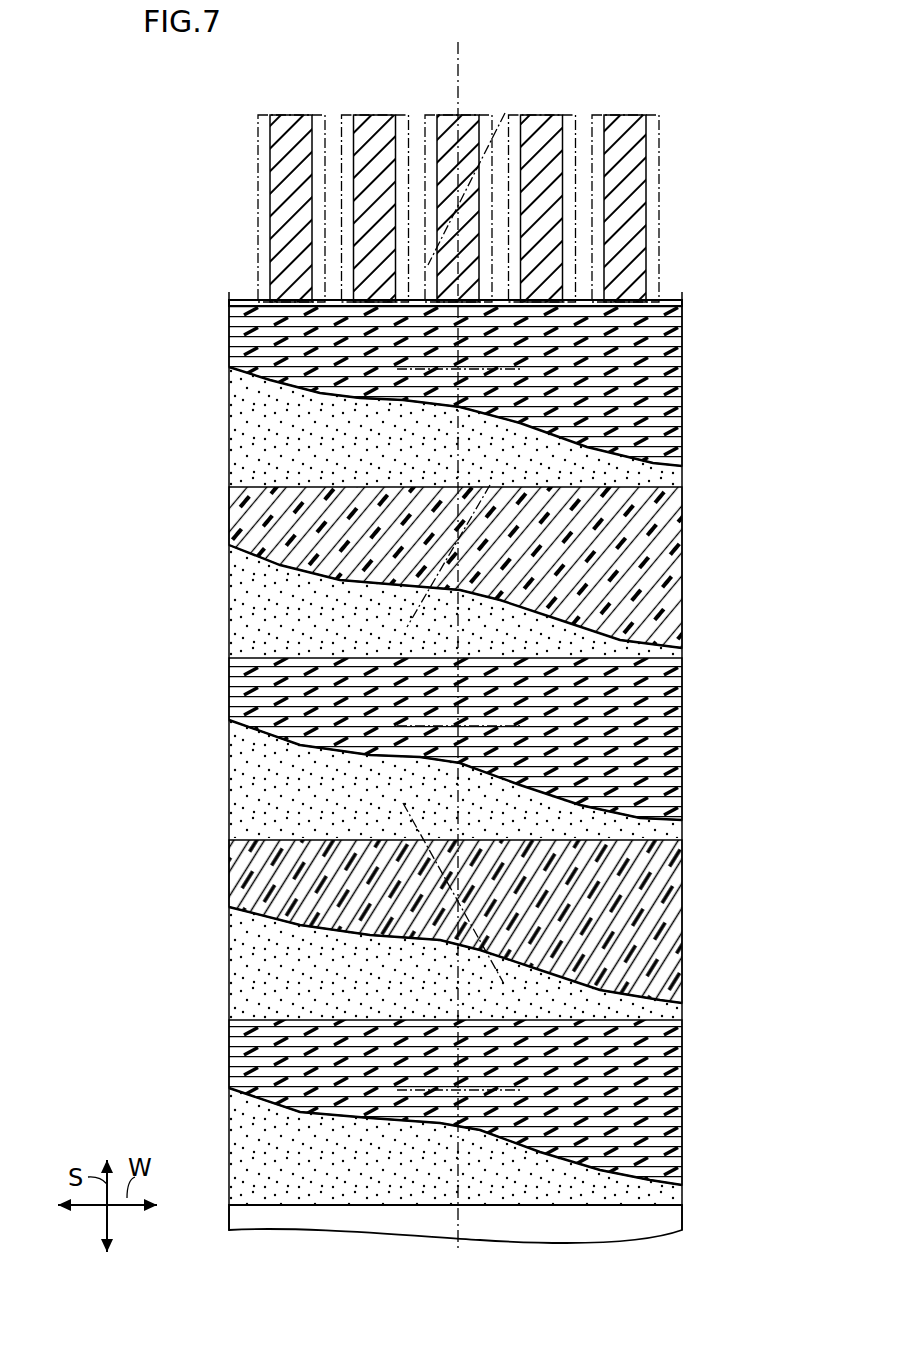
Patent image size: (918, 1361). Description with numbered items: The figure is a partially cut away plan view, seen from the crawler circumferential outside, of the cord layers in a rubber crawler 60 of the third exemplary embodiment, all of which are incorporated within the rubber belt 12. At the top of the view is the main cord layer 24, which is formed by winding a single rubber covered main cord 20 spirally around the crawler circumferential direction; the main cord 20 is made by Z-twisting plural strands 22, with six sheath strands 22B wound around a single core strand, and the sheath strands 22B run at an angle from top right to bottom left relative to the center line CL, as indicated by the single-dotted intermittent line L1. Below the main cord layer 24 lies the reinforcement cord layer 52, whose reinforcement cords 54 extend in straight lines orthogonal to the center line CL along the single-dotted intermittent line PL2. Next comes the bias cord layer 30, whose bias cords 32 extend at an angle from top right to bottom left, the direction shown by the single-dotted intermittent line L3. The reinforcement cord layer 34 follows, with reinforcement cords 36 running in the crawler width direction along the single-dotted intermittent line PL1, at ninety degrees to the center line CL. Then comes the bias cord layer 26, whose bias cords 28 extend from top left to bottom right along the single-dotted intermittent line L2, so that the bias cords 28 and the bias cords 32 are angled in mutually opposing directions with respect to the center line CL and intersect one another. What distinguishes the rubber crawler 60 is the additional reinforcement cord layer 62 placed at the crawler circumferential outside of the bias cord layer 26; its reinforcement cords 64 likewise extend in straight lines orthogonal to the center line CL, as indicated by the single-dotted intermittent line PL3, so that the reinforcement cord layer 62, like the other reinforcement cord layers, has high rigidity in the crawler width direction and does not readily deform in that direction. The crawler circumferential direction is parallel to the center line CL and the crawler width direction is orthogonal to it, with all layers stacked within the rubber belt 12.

The rubber crawler 60 is at (131, 160).
The main cord 20 is at (267, 150).
The strands 22 is at (458, 177).
The sheath strands 22B is at (285, 115).
The main cord layer 24 is at (678, 98).
The reinforcement cords 54 is at (670, 372).
The reinforcement cord layer 52 is at (685, 425).
The bias cords 32 is at (680, 563).
The bias cord layer 30 is at (684, 607).
The reinforcement cords 36 is at (685, 704).
The reinforcement cord layer 34 is at (690, 762).
The bias cord layer 26 is at (693, 888).
The bias cords 28 is at (687, 988).
The reinforcement cords 64 is at (678, 1090).
The reinforcement cord layer 62 is at (690, 1145).
The rubber belt 12 is at (672, 1220).
The center line CL is at (458, 43).
The single-dotted intermittent line L1 is at (497, 130).
The single-dotted intermittent line L2 is at (415, 815).
The single-dotted intermittent line L3 is at (423, 600).
The single-dotted intermittent line PL1 is at (397, 727).
The single-dotted intermittent line PL2 is at (397, 370).
The single-dotted intermittent line PL3 is at (397, 1091).